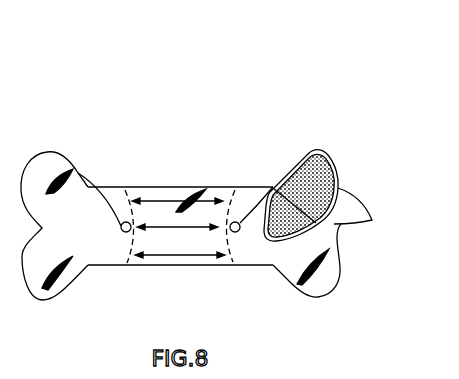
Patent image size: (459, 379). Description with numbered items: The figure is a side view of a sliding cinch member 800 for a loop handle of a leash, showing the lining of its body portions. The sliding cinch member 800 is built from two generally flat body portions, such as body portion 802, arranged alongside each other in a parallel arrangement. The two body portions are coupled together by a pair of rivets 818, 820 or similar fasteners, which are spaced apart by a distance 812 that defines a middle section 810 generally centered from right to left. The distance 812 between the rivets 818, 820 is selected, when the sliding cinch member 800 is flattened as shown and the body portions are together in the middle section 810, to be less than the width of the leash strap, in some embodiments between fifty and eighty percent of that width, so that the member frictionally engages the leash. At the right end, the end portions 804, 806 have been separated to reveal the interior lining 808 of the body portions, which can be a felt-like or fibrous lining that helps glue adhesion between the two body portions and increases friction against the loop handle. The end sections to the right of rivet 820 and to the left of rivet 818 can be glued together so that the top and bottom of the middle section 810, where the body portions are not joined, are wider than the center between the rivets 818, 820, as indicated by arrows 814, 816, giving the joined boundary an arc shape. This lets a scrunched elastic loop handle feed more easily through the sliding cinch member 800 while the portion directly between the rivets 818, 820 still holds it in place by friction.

The sliding cinch member 800 is at (272, 37).
The body portion 802 is at (130, 189).
The end portion 804 is at (333, 157).
The end portion 806 is at (268, 241).
The interior lining 808 is at (373, 221).
The middle section 810 is at (188, 187).
The distance between the rivets 812 is at (172, 227).
The arrow 814 is at (182, 254).
The arrow 816 is at (210, 200).
The rivet 818 is at (78, 177).
The rivet 820 is at (240, 222).